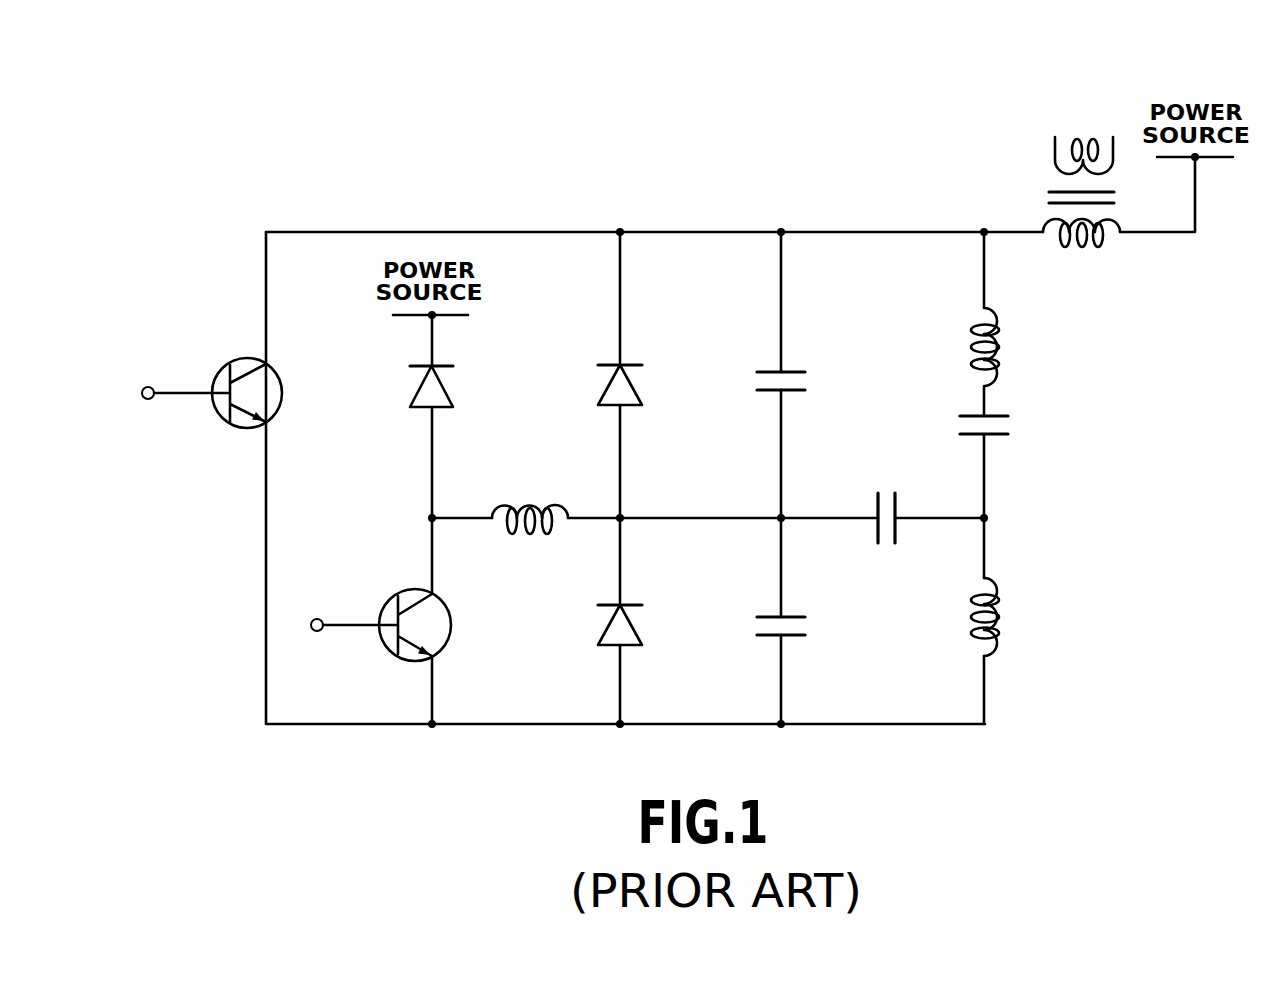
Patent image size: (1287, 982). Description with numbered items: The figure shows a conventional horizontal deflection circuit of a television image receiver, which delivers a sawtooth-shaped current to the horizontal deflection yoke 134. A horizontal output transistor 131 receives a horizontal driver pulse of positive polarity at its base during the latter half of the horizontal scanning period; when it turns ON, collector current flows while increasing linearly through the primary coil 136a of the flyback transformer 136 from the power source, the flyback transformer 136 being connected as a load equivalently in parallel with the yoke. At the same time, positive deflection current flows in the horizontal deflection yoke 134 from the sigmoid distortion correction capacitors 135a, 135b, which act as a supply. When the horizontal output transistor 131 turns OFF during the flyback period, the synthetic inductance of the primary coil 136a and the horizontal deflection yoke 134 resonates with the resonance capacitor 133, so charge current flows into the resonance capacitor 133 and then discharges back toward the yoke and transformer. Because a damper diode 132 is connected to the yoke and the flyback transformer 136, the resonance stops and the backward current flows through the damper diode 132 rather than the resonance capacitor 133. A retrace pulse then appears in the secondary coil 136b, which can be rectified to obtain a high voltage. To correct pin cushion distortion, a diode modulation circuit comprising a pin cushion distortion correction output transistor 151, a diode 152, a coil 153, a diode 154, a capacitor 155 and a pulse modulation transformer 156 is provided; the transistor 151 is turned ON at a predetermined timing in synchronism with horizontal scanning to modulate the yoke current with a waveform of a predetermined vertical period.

The horizontal output transistor 131 is at (228, 367).
The pin cushion distortion correction output transistor 151 is at (388, 600).
The diode 152 is at (412, 387).
The damper diode 132 is at (597, 387).
The diode 154 is at (600, 625).
The resonance capacitor 133 is at (753, 383).
The capacitor 155 is at (757, 622).
The coil 153 is at (528, 493).
The sigmoid distortion characteristic correction capacitor 135a is at (885, 486).
The sigmoid distortion characteristic correction capacitor 135b is at (1015, 428).
The horizontal deflection yoke 134 is at (1015, 352).
The pulse modulation transformer 156 is at (1018, 617).
The flyback transformer 136 is at (1067, 174).
The primary coil 136a is at (1085, 250).
The secondary coil 136b is at (1097, 130).